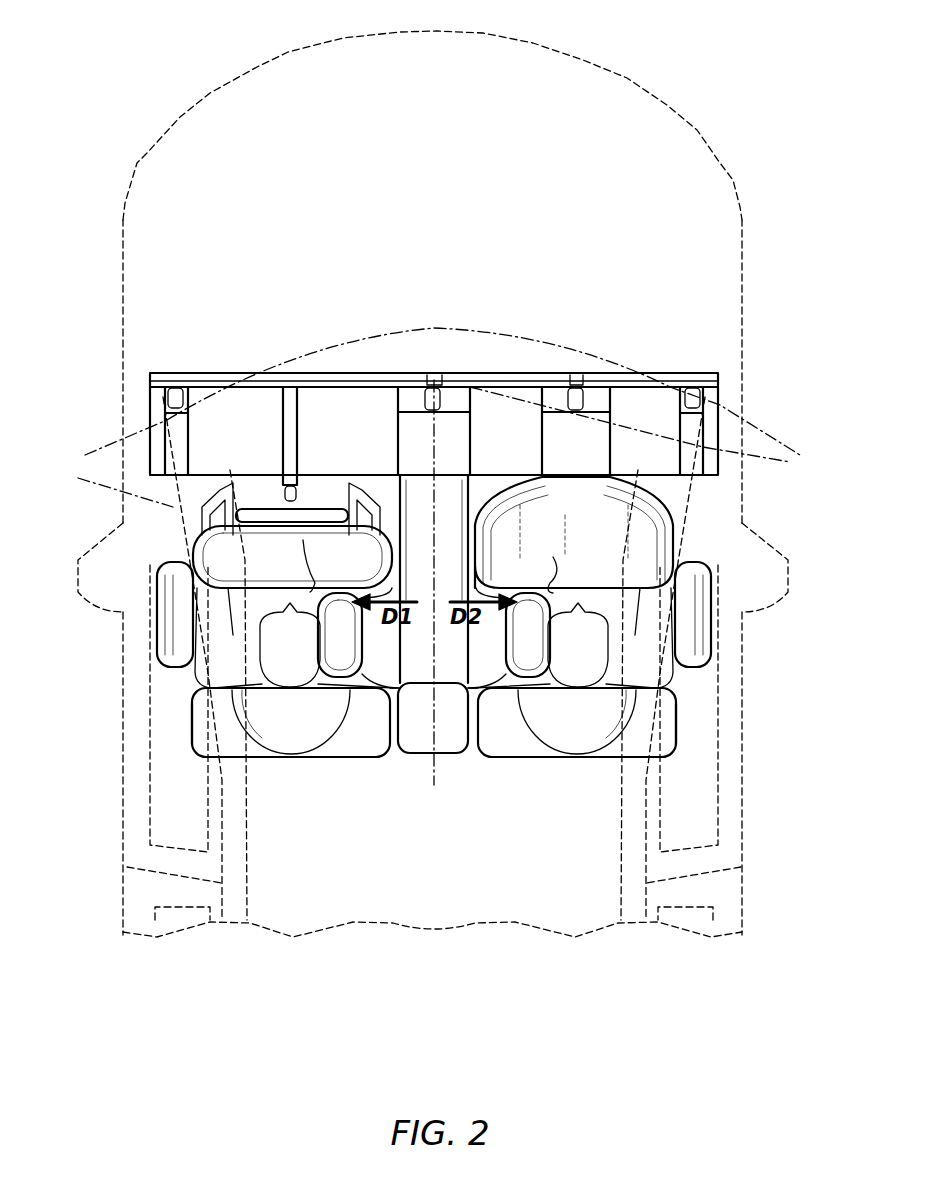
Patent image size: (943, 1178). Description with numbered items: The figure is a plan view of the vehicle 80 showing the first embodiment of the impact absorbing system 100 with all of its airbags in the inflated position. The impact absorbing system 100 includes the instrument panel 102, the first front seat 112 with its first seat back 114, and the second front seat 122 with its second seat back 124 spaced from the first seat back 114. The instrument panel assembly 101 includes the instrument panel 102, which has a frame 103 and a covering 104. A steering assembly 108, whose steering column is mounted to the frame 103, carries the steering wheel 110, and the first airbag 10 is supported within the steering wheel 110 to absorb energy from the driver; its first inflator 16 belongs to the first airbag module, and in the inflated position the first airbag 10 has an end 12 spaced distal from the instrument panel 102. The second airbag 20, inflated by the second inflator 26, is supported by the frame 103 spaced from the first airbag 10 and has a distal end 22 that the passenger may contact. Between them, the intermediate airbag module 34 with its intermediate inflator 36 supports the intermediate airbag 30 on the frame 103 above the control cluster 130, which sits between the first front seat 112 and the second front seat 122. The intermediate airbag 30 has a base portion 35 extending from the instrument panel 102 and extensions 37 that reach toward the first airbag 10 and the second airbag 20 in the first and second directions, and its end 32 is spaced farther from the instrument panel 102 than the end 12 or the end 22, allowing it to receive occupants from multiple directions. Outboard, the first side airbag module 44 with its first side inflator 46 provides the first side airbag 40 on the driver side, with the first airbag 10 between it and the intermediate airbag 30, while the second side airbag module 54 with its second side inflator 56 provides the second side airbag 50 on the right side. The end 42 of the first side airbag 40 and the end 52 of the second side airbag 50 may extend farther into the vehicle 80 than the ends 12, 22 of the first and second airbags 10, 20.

The impact absorbing system 100 is at (96, 66).
The vehicle 80 is at (294, 42).
The frame 103 is at (165, 372).
The instrument panel 102 is at (148, 437).
The covering 104 is at (157, 460).
The first side inflator 46 is at (160, 397).
The first side airbag module 44 is at (176, 392).
The intermediate inflator 36 is at (432, 388).
The intermediate airbag module 34 is at (420, 385).
The second side airbag module 54 is at (687, 385).
The second inflator 26 is at (576, 388).
The instrument panel assembly 101 is at (728, 448).
The second side inflator 56 is at (703, 397).
The steering wheel 110 is at (283, 413).
The steering assembly 108 is at (305, 449).
The intermediate airbag 30 is at (462, 428).
The control cluster 130 is at (470, 462).
The end of intermediate airbag 32 is at (433, 742).
The first airbag 10 is at (229, 617).
The first inflator 16 is at (283, 493).
The end of first airbag 12 is at (318, 565).
The first front seat 112 is at (190, 727).
The extensions 37 is at (377, 742).
The first seat back 114 is at (287, 758).
The second airbag 20 is at (629, 613).
The base portion 35 is at (450, 532).
The end of second airbag 22 is at (543, 566).
The second front seat 122 is at (678, 727).
The second seat back 124 is at (581, 758).
The end of first side airbag 42 is at (170, 667).
The first side airbag 40 is at (150, 608).
The end of second side airbag 52 is at (698, 668).
The second side airbag 50 is at (717, 611).